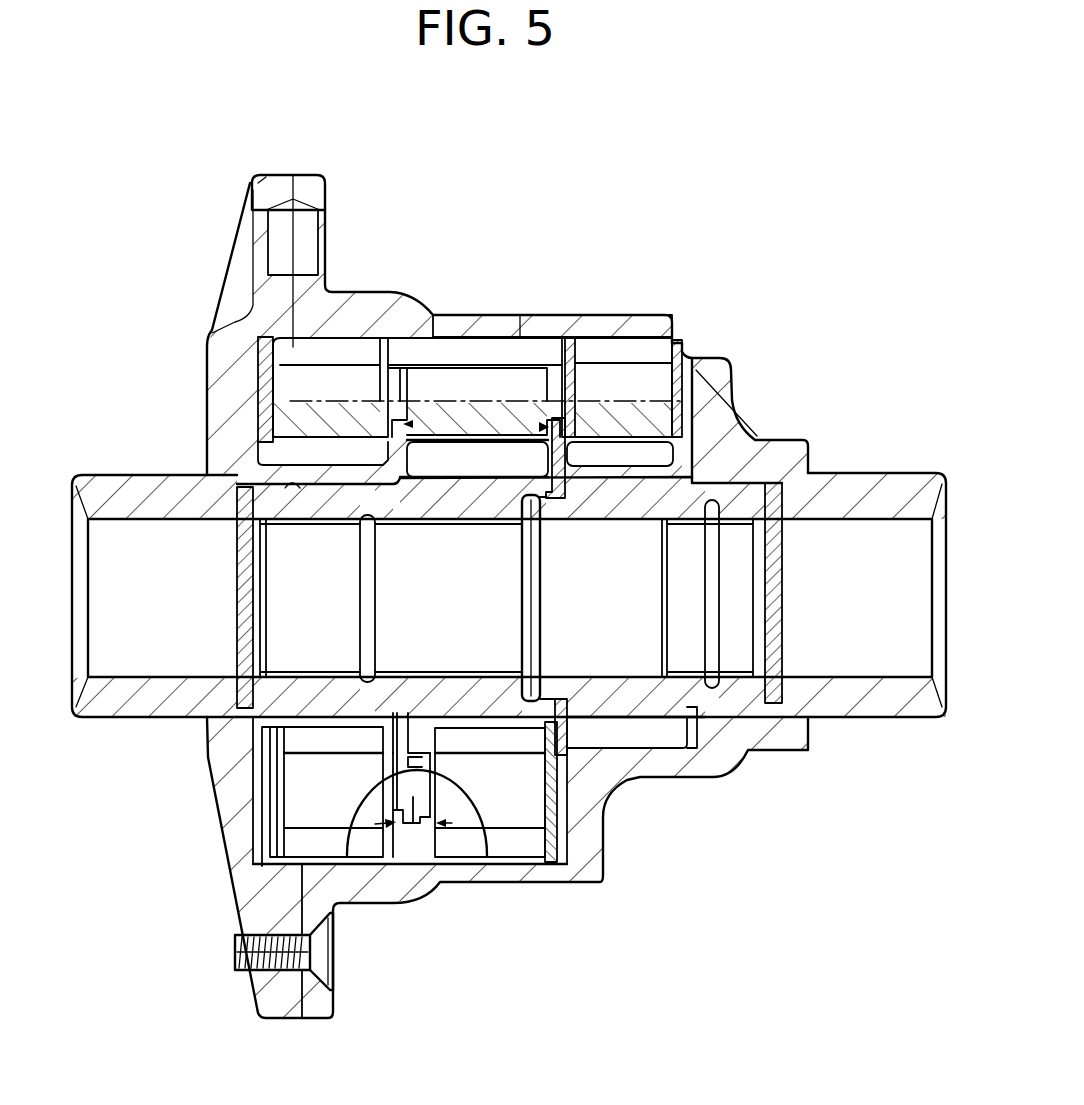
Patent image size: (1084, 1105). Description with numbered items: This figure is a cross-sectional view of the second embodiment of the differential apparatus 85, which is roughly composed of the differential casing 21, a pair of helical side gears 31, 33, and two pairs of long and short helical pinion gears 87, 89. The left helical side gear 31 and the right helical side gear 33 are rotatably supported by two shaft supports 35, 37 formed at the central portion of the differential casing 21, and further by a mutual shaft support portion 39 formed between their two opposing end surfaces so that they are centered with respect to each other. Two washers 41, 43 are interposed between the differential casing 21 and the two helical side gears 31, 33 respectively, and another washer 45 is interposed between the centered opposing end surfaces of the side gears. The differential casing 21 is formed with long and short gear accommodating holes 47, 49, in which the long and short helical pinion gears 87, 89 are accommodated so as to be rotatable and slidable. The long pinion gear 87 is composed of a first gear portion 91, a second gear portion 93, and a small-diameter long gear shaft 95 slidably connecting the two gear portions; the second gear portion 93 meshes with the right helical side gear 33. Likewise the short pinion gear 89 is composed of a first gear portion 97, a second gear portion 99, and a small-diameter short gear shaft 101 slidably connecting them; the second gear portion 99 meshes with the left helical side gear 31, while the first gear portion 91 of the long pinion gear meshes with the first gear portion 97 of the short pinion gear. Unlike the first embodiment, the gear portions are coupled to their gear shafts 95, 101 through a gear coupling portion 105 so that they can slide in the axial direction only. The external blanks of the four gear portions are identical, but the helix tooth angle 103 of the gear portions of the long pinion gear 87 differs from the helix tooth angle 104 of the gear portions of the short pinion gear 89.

The differential casing 21 is at (300, 175).
The left helical side gear 31 is at (507, 470).
The right helical side gear 33 is at (640, 720).
The shaft support 35 is at (289, 490).
The shaft support 37 is at (729, 480).
The mutual shaft support portion 39 is at (540, 512).
The washer 41 is at (247, 680).
The washer 43 is at (778, 662).
The washer 45 is at (560, 697).
The long gear accommodating hole 47 is at (413, 340).
The short gear accommodating hole 49 is at (423, 830).
The differential apparatus 85 is at (674, 224).
The long helical pinion gear 87 is at (694, 347).
The short helical pinion gear 89 is at (553, 848).
The first gear portion 91 is at (338, 347).
The second gear portion 93 is at (642, 343).
The long gear shaft 95 is at (500, 382).
The first gear portion 97 is at (300, 743).
The second gear portion 99 is at (508, 740).
The short gear shaft 101 is at (413, 797).
The helix tooth angle 103 is at (481, 317).
The helix tooth angle 104 is at (393, 796).
The gear coupling portion 105 is at (540, 427).